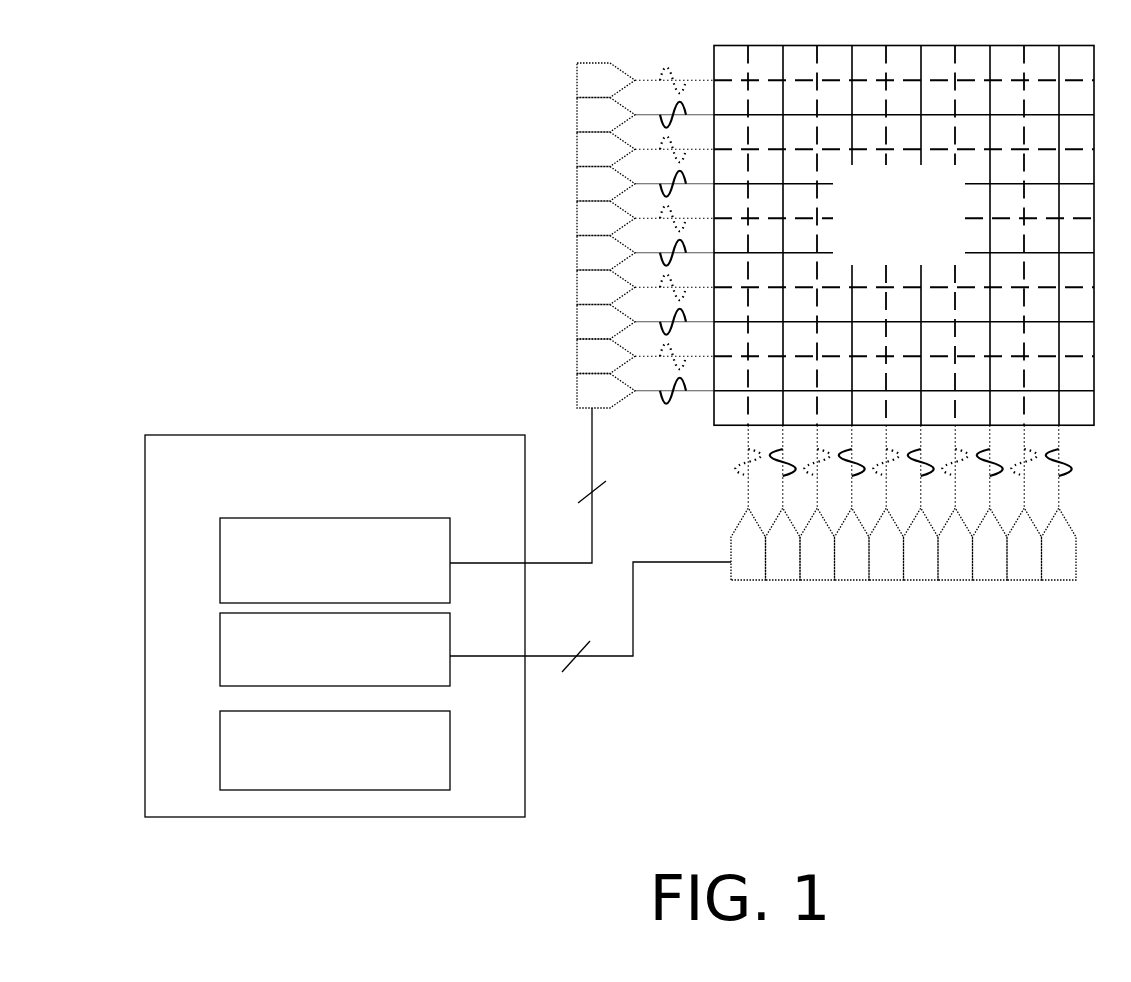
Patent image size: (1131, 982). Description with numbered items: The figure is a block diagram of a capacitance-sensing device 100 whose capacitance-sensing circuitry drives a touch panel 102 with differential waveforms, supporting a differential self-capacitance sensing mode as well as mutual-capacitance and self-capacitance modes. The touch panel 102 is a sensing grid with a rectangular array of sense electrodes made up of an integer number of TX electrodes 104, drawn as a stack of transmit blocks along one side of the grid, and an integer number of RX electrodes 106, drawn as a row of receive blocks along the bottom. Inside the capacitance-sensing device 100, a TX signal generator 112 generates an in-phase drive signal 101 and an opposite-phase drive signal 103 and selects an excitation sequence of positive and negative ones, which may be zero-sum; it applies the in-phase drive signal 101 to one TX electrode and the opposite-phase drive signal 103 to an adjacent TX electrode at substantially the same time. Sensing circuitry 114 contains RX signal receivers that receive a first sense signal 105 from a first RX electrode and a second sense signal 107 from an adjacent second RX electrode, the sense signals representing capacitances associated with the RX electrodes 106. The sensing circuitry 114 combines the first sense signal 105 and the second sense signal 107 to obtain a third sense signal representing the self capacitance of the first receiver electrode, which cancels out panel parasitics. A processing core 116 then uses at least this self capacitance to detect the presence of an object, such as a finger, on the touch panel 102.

The capacitance-sensing device 100 is at (335, 593).
The in-phase drive signal 101 is at (660, 400).
The touch panel 102 is at (700, 40).
The opposite-phase drive signal 103 is at (675, 364).
The TX electrodes 104 is at (566, 240).
The first sense signal 105 is at (736, 470).
The RX electrodes 106 is at (869, 587).
The second sense signal 107 is at (770, 462).
The TX signal generator 112 is at (335, 560).
The sensing circuitry 114 is at (335, 649).
The processing core 116 is at (335, 750).